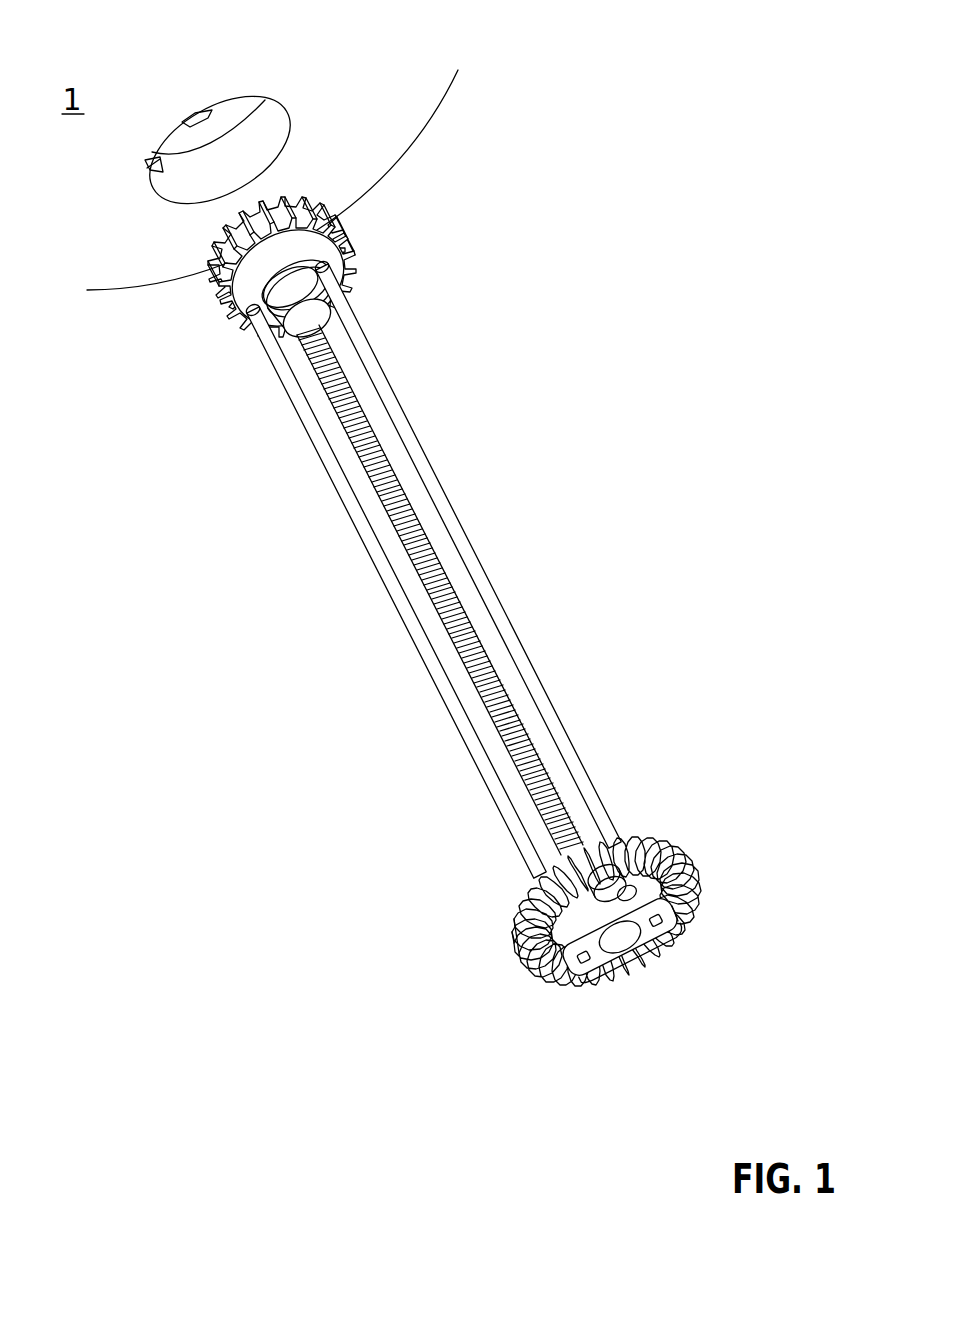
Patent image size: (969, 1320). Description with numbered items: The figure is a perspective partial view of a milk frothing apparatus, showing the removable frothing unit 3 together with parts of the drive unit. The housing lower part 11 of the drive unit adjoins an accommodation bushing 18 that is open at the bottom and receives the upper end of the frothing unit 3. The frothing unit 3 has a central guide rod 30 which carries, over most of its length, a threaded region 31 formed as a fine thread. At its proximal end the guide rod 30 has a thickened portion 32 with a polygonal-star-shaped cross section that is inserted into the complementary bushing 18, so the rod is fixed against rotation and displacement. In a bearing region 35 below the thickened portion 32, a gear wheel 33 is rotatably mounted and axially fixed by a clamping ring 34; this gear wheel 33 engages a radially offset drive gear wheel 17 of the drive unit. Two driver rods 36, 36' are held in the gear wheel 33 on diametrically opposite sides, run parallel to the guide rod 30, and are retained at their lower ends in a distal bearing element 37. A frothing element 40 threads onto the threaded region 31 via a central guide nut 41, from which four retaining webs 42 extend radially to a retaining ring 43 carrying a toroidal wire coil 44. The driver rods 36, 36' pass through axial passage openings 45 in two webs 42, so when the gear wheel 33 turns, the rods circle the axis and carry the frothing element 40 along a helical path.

The frothing unit 3 is at (353, 666).
The housing lower part 11 is at (122, 273).
The drive gear wheel 17 is at (155, 190).
The accommodation bushing 18 is at (214, 118).
The central guide rod 30 is at (397, 458).
The threaded region 31 is at (468, 617).
The thickened portion 32 is at (274, 222).
The gear wheel 33 is at (232, 313).
The clamping ring 34 is at (267, 303).
The bearing region 35 is at (301, 293).
The driver rod 36 is at (395, 590).
The driver rod 36' is at (467, 553).
The distal bearing element 37 is at (600, 977).
The frothing element 40 is at (490, 910).
The central guide nut 41 is at (610, 887).
The retaining webs 42 is at (627, 887).
The retaining ring 43 is at (527, 888).
The toroidal wire coil 44 is at (530, 940).
The passage openings 45 is at (673, 913).